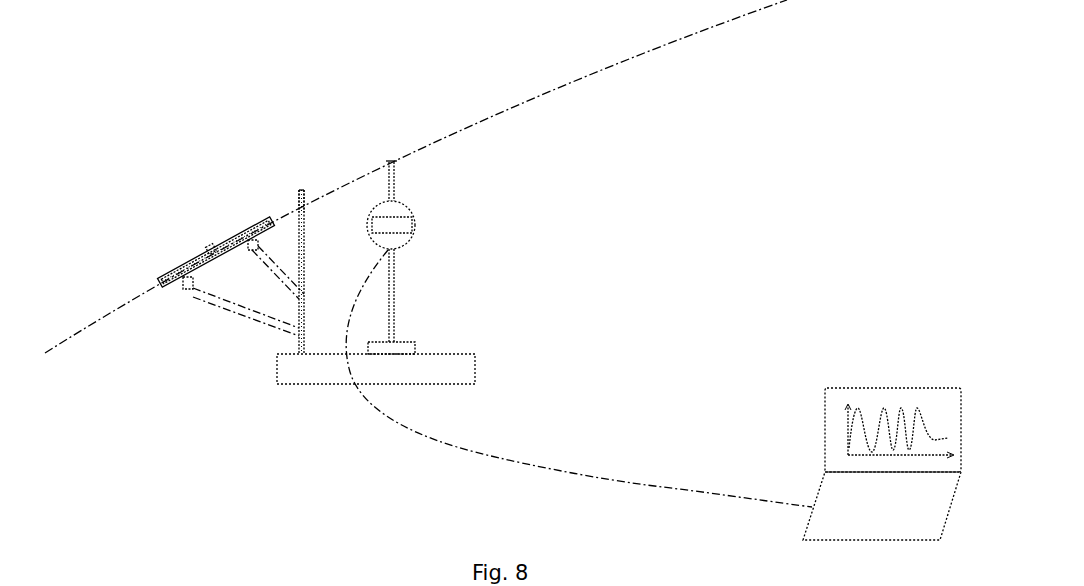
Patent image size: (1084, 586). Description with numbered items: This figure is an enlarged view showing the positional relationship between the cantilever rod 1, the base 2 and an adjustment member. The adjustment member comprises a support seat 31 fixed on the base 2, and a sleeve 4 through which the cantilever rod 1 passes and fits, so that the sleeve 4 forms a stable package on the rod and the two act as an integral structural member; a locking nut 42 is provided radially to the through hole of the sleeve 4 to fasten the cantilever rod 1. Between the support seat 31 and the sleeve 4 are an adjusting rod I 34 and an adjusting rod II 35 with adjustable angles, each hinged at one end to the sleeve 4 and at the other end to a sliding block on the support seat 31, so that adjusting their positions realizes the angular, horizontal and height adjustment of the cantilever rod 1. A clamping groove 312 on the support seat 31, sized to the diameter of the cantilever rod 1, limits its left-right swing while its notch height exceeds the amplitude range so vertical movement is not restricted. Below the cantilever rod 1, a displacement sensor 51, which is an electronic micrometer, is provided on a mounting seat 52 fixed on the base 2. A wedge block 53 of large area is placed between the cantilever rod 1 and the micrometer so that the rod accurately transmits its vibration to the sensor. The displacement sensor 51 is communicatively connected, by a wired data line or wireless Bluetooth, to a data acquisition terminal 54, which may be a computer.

The cantilever rod 1 is at (558, 85).
The base 2 is at (313, 387).
The support seat 31 is at (306, 297).
The clamping groove 312 is at (299, 193).
The sleeve 4 is at (163, 272).
The locking nut 42 is at (208, 245).
The adjusting rod I 34 is at (275, 278).
The adjusting rod II 35 is at (219, 300).
The displacement sensor 51 is at (416, 223).
The mounting seat 52 is at (401, 340).
The wedge block 53 is at (399, 164).
The data acquisition terminal 54 is at (884, 388).